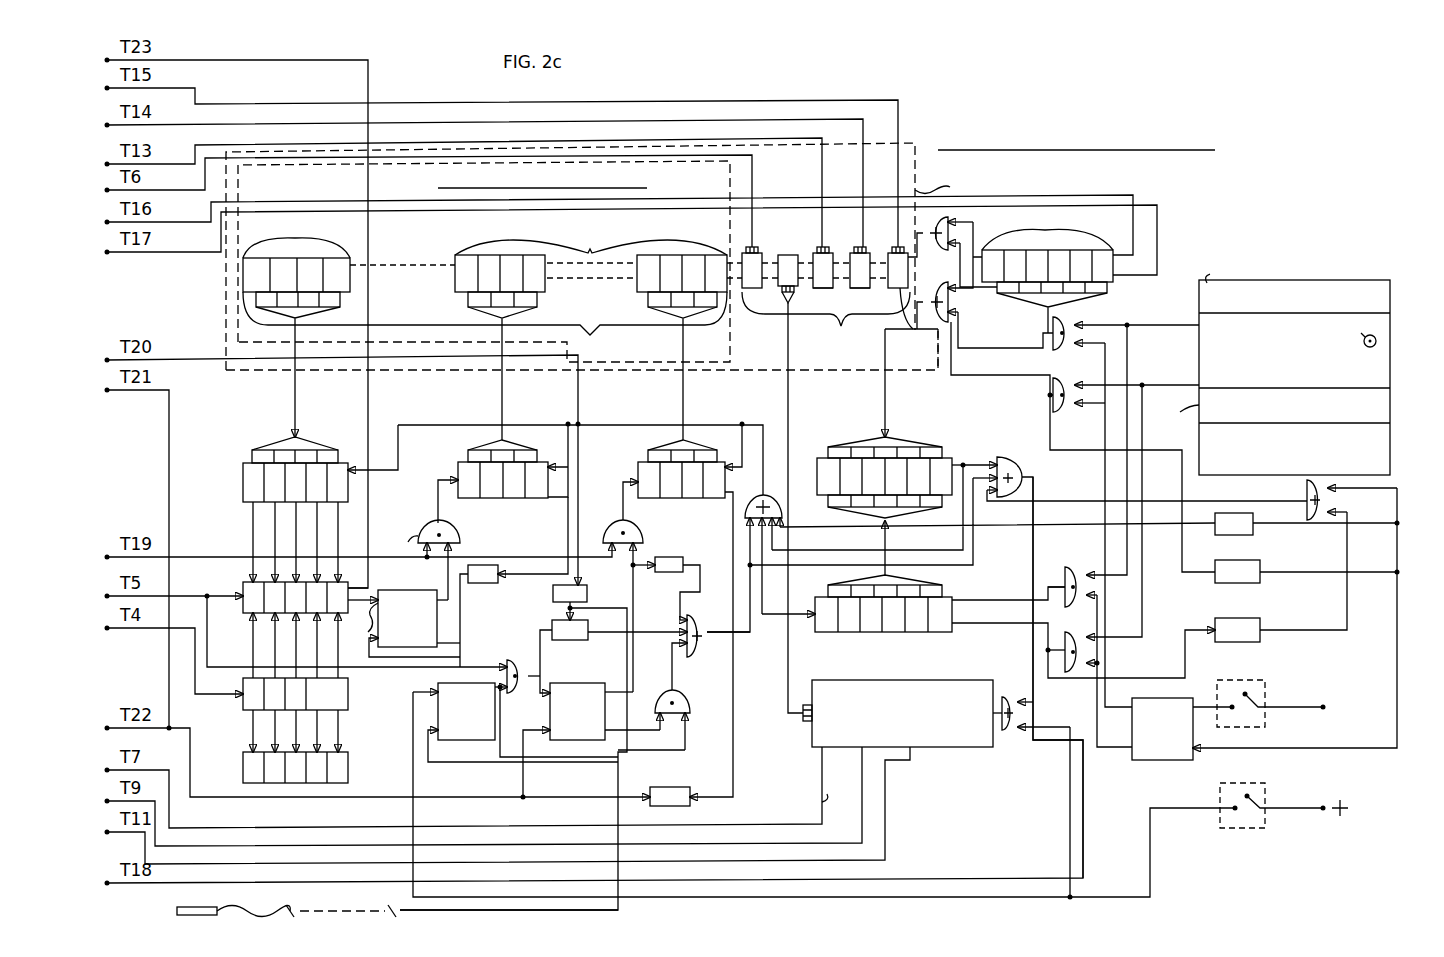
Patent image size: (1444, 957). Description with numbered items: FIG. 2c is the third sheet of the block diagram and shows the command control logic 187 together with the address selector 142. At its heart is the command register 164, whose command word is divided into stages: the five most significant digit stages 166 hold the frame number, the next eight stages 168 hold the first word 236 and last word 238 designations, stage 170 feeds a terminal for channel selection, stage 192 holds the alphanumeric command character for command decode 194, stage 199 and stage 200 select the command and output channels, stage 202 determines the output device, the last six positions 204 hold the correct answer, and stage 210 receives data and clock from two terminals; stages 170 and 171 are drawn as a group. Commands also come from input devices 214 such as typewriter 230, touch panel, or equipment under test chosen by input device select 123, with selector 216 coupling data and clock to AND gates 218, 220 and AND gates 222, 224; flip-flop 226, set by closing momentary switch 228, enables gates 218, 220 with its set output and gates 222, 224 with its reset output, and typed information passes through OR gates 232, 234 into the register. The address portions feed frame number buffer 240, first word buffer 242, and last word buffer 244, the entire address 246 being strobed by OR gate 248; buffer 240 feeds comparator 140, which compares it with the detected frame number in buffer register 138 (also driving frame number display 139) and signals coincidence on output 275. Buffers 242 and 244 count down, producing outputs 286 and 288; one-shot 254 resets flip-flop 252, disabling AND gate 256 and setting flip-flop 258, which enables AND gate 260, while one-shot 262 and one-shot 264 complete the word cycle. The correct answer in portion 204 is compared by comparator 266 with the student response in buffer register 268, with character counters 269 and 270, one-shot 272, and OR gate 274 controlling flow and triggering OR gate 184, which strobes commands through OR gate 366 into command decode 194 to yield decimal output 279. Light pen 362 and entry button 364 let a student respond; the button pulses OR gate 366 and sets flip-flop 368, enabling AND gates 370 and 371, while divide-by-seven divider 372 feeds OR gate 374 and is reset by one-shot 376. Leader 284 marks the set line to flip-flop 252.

The input device select 123 is at (1371, 330).
The buffer register 138 is at (348, 700).
The frame number display 139 is at (348, 765).
The comparator 140 is at (240, 606).
The address selector 142 is at (715, 193).
The command register 164 is at (950, 182).
The most significant digit stages 166 is at (296, 327).
The next eight significant stages 168 is at (591, 262).
The M.S.D. stage 170 is at (819, 290).
The flip-flop group 171 is at (826, 322).
The OR gate 184 is at (1005, 457).
The command control logic 187 is at (1275, 169).
The next most significant stage 192 is at (788, 253).
The command decode 194 is at (900, 680).
The stage 199 is at (816, 302).
The stage 200 is at (868, 302).
The stage 202 is at (911, 383).
The last six positions 204 is at (1047, 269).
The stage 210 is at (1108, 287).
The input devices 214 is at (1328, 273).
The selector 216 is at (1174, 412).
The AND gate 218 is at (1060, 351).
The AND gate 220 is at (1132, 498).
The AND gate 222 is at (1072, 575).
The AND gate 224 is at (1075, 673).
The flip-flop 226 is at (1140, 762).
The momentary switch 228 is at (1267, 722).
The typewriter 230 is at (1227, 268).
The OR gate 232 is at (952, 252).
The OR gate 234 is at (948, 306).
The first word 236 is at (538, 300).
The last word 238 is at (648, 300).
The frame number buffer 240 is at (345, 463).
The first word buffer 242 is at (465, 500).
The last word buffer 244 is at (648, 500).
The entire address 246 is at (485, 324).
The OR gate 248 is at (782, 500).
The flip-flop 252 is at (419, 590).
The one-shot 254 is at (488, 583).
The AND gate 256 is at (458, 536).
The flip-flop 258 is at (583, 683).
The AND gate 260 is at (643, 530).
The one-shot 262 is at (675, 574).
The one-shot 264 is at (686, 787).
The comparator 266 is at (815, 448).
The buffer register 268 is at (952, 596).
The character counter 269 is at (1262, 563).
The divide by 6 character counter 270 is at (1262, 617).
The one-shot 272 is at (1250, 537).
The OR gate 274 is at (1307, 504).
The output 275 is at (396, 541).
The decimal output 279 is at (842, 789).
The conductor 284 is at (361, 624).
The output 286 is at (548, 500).
The output 288 is at (733, 505).
The light pen 362 is at (190, 917).
The entry button 364 is at (1252, 830).
The OR gate 366 is at (1005, 695).
The flip-flop 368 is at (442, 742).
The AND gate 370 is at (508, 660).
The AND gate 371 is at (690, 700).
The divide by 7 divider 372 is at (552, 626).
The OR gate 374 is at (697, 657).
The one-shot 376 is at (588, 592).